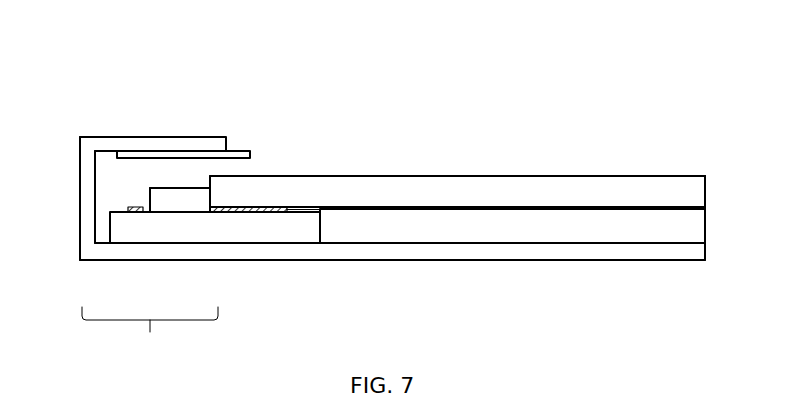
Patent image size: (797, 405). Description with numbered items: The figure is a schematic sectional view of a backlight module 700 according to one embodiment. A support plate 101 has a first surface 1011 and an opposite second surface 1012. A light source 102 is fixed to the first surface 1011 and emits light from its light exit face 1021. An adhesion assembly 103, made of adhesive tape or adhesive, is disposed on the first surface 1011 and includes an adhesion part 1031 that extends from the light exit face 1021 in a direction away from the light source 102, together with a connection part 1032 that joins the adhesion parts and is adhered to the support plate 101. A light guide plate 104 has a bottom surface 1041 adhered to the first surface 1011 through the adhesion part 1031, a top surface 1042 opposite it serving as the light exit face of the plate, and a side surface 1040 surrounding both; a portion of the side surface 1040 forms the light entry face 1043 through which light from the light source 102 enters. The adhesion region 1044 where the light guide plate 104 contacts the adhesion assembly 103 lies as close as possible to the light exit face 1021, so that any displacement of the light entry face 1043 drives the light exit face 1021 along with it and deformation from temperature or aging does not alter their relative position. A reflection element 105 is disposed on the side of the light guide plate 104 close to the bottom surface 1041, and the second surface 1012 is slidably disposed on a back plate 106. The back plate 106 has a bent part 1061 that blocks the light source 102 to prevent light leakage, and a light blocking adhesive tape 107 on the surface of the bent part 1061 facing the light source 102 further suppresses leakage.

The backlight module 700 is at (100, 44).
The first surface 1011 is at (88, 200).
The bent part 1061 is at (100, 142).
The light blocking adhesive tape 107 is at (242, 152).
The light source 102 is at (180, 200).
The light exit face 1021 is at (182, 188).
The light guide plate 104 is at (643, 187).
The light entry face 1043 is at (212, 200).
The top surface 1042 is at (472, 177).
The bottom surface 1041 is at (567, 190).
The adhesion region 1044 is at (270, 208).
The support plate 101 is at (292, 227).
The second surface 1012 is at (252, 243).
The adhesion part 1031 is at (256, 239).
The connection part 1032 is at (138, 213).
The adhesion assembly 103 is at (150, 333).
The reflection element 105 is at (437, 230).
The back plate 106 is at (540, 250).
The side surface 1040 is at (705, 202).